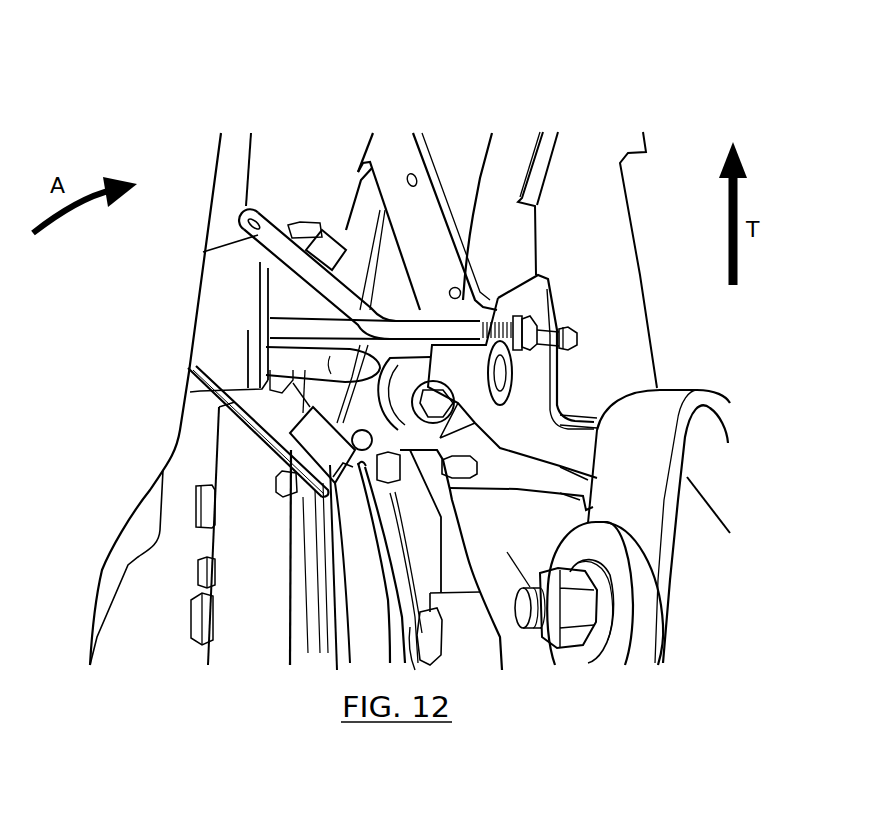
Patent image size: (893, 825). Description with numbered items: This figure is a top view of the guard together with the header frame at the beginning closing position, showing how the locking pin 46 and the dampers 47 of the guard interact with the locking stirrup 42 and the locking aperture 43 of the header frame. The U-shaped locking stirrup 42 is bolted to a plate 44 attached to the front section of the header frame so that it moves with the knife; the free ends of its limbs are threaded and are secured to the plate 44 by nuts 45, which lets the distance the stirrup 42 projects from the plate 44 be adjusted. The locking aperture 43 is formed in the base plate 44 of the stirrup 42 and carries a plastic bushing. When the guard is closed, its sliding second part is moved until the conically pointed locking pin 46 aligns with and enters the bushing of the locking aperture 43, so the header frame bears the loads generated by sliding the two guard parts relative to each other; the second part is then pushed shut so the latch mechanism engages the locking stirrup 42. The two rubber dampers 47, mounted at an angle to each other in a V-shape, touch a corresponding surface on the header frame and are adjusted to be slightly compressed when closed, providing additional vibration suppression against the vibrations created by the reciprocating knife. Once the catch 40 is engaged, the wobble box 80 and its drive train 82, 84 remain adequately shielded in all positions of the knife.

The catch 40 is at (233, 100).
The locking stirrup 42 is at (278, 238).
The locking aperture 43 is at (513, 387).
The plate 44 is at (573, 337).
The nuts 45 is at (465, 240).
The locking pin 46 is at (303, 352).
The dampers 47 is at (327, 250).
The wobble box 80 is at (555, 653).
The drive train 82 is at (357, 600).
The drive train 84 is at (288, 527).